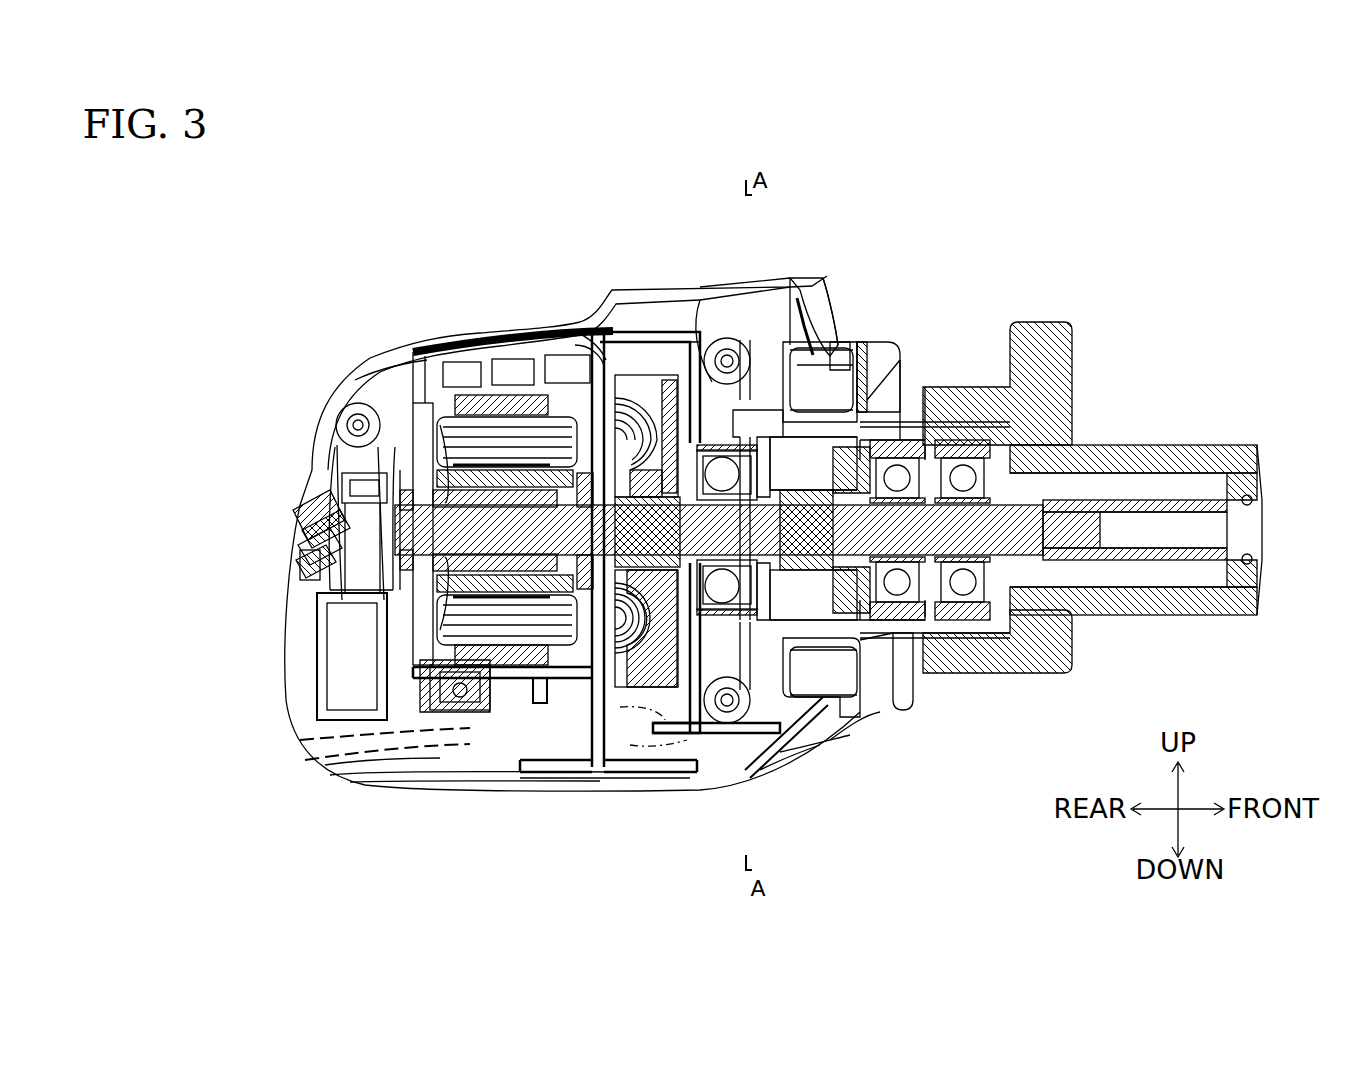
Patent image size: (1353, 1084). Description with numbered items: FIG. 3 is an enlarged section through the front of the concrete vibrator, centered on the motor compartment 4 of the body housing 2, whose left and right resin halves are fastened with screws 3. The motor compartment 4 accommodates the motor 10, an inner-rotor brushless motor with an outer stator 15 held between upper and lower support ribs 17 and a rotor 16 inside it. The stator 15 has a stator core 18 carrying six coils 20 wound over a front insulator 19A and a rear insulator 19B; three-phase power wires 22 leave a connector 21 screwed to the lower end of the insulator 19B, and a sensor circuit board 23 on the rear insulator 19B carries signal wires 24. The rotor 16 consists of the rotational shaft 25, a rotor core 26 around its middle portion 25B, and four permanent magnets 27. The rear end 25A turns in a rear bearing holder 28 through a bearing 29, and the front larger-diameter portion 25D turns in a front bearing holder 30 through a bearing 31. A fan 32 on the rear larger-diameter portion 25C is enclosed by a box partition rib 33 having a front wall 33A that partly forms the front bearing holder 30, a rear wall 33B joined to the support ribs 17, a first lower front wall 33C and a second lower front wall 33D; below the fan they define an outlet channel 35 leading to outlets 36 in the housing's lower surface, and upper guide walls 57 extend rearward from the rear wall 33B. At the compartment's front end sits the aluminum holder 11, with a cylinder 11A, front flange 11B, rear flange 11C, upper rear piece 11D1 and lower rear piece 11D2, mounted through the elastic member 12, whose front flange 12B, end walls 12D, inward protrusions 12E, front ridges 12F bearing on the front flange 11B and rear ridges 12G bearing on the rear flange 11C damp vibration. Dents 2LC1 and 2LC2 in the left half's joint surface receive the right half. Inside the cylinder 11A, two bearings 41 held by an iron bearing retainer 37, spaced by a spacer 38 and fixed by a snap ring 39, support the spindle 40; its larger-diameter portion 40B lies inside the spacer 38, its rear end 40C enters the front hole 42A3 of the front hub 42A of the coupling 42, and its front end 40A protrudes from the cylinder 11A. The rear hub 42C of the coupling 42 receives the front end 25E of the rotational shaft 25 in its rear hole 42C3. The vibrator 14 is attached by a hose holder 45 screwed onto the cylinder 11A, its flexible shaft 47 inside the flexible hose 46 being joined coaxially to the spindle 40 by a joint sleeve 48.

The body housing 2 is at (340, 405).
The screws 3 is at (350, 405).
The motor compartment 4 is at (410, 348).
The motor 10 is at (410, 400).
The holder 11 is at (870, 342).
The cylinder 11A is at (908, 710).
The front flange 11B is at (850, 345).
The rear flange 11C is at (745, 733).
The upper rear piece 11D1 is at (745, 340).
The lower rear piece 11D2 is at (745, 690).
The elastic member 12 is at (793, 280).
The front flange 12B is at (838, 330).
The end walls 12D is at (810, 750).
The protrusions 12E is at (845, 740).
The front ridges 12F is at (870, 725).
The rear ridges 12G is at (782, 748).
The vibrator 14 is at (1203, 445).
The stator 15 is at (462, 420).
The rotor 16 is at (360, 475).
The support ribs 17 is at (548, 490).
The stator core 18 is at (522, 470).
The insulator 19A is at (550, 645).
The insulator 19B is at (462, 430).
The coils 20 is at (505, 395).
The connector 21 is at (470, 712).
The power wires 22 is at (300, 742).
The sensor circuit board 23 is at (385, 415).
The signal wires 24 is at (330, 772).
The rotational shaft 25 is at (340, 520).
The rear end 25A is at (293, 520).
The middle portion 25B is at (495, 715).
The rear larger-diameter portion 25C is at (572, 330).
The front larger-diameter portion 25D is at (712, 340).
The front end 25E is at (808, 318).
The rotor core 26 is at (625, 395).
The permanent magnets 27 is at (335, 515).
The rear bearing holder 28 is at (315, 548).
The bearing 29 is at (303, 565).
The front bearing holder 30 is at (695, 332).
The bearing 31 is at (680, 735).
The fan 32 is at (668, 380).
The partition rib 33 is at (599, 335).
The front wall 33A is at (655, 332).
The rear wall 33B is at (592, 335).
The first lower front wall 33C is at (660, 772).
The second lower front wall 33D is at (560, 772).
The outlet channel 35 is at (632, 580).
The outlets 36 is at (723, 615).
The bearing retainer 37 is at (900, 420).
The spacer 38 is at (925, 625).
The snap ring 39 is at (870, 342).
The spindle 40 is at (900, 440).
The front end 40A is at (1118, 447).
The larger-diameter portion 40B is at (948, 422).
The rear end 40C is at (990, 640).
The bearings 41 is at (905, 458).
The coupling 42 is at (830, 576).
The front hub 42A is at (860, 580).
The front hole 42A3 is at (930, 630).
The rear hub 42C is at (772, 576).
The rear hole 42C3 is at (790, 437).
The hose holder 45 is at (1040, 322).
The flexible hose 46 is at (1250, 490).
The flexible shaft 47 is at (1203, 548).
The joint sleeve 48 is at (1135, 562).
The upper guide walls 57 is at (412, 785).
The dent 2LC1 is at (825, 350).
The dent 2LC2 is at (820, 700).